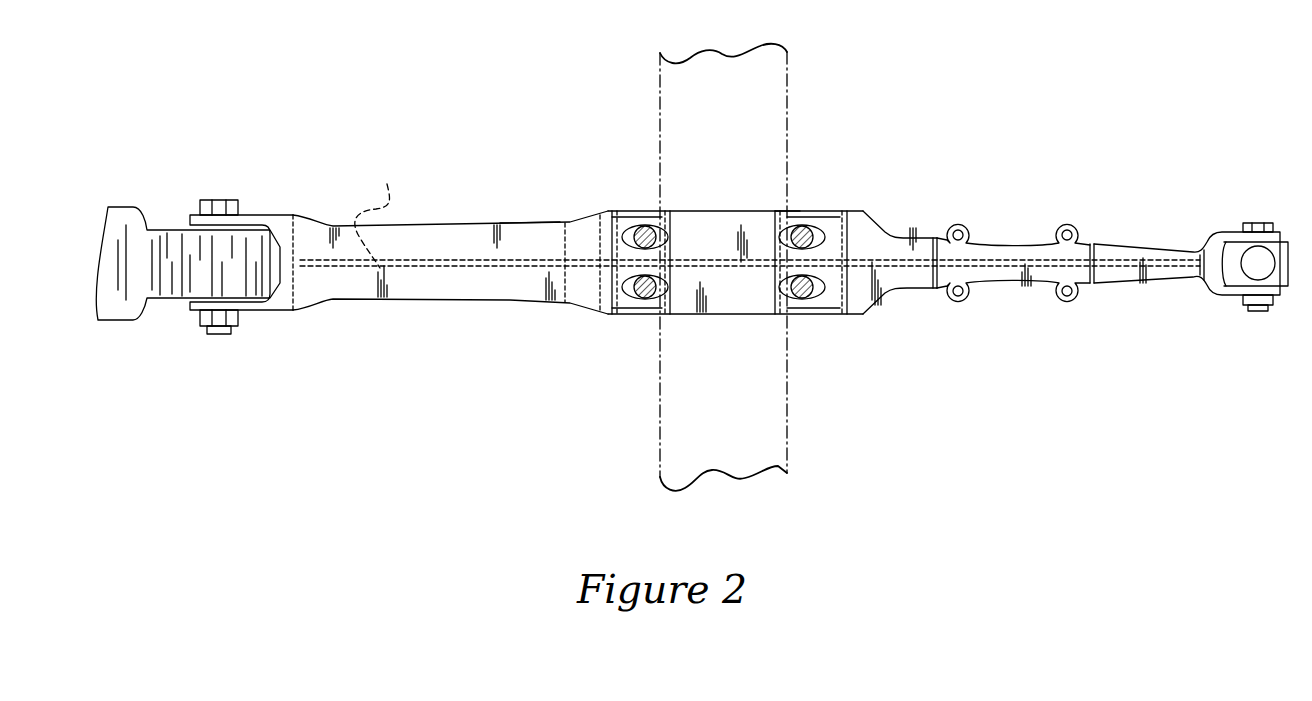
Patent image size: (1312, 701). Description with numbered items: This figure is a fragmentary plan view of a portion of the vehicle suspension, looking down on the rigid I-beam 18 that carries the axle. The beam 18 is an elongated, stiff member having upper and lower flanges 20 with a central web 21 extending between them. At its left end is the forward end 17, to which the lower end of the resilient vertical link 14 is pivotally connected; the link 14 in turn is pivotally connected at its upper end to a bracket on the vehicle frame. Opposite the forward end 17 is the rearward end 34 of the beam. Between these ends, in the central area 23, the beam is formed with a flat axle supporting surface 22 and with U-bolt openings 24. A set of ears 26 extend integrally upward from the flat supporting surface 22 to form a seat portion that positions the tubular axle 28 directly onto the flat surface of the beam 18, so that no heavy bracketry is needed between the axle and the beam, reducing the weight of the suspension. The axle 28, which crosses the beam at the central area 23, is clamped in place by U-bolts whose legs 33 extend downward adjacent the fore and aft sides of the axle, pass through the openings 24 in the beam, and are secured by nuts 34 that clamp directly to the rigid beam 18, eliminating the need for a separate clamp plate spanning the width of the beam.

The resilient vertical link 14 is at (140, 237).
The forward end 17 is at (308, 223).
The rigid I-beam 18 is at (511, 220).
The upper and lower flanges 20 is at (458, 240).
The central web 21 is at (378, 214).
The flat axle supporting surface 22 is at (750, 292).
The central area 23 is at (788, 209).
The U-bolt openings 24 is at (823, 236).
The ears 26 is at (641, 312).
The tubular axle 28 is at (747, 423).
The legs of the U-bolts 33 is at (781, 238).
The rearward end 34 is at (1168, 250).